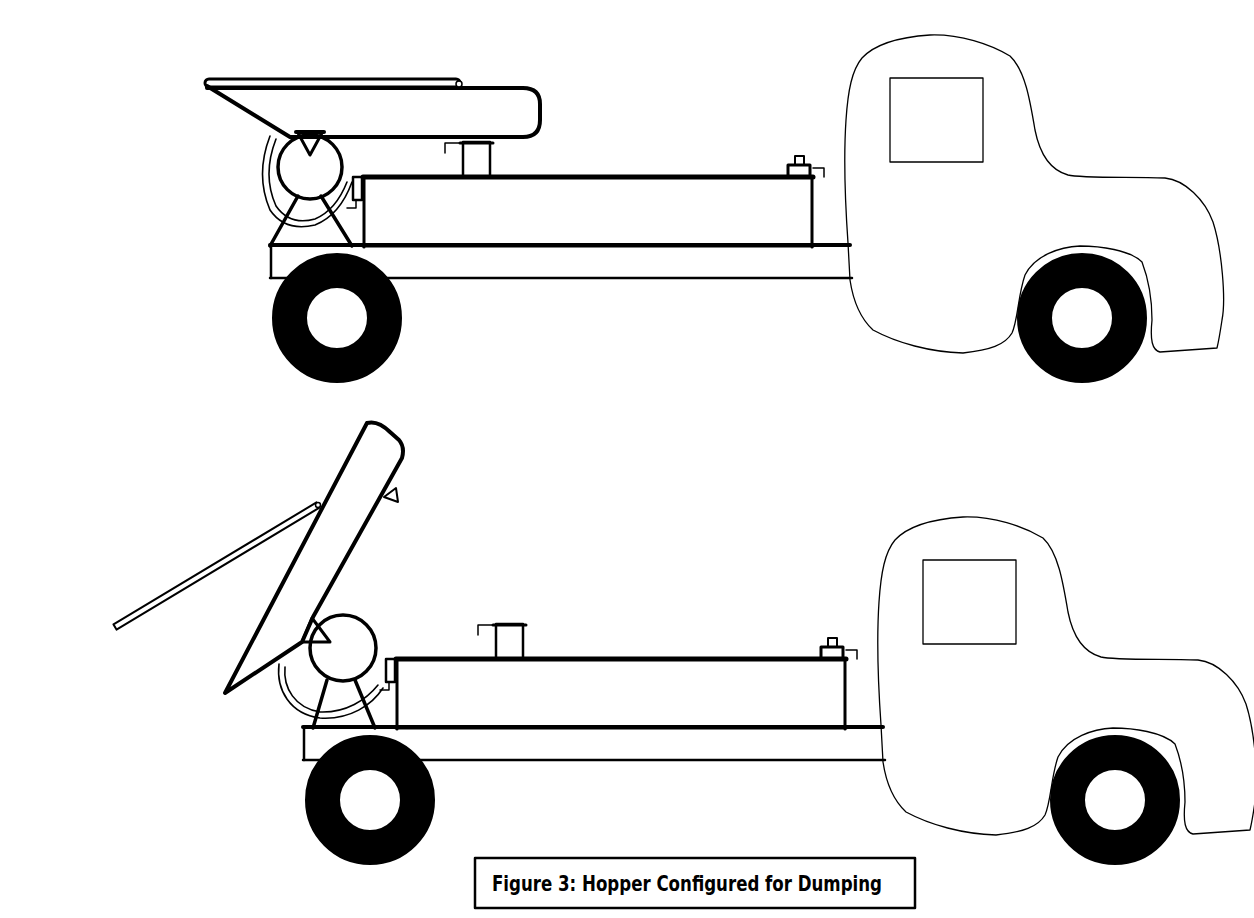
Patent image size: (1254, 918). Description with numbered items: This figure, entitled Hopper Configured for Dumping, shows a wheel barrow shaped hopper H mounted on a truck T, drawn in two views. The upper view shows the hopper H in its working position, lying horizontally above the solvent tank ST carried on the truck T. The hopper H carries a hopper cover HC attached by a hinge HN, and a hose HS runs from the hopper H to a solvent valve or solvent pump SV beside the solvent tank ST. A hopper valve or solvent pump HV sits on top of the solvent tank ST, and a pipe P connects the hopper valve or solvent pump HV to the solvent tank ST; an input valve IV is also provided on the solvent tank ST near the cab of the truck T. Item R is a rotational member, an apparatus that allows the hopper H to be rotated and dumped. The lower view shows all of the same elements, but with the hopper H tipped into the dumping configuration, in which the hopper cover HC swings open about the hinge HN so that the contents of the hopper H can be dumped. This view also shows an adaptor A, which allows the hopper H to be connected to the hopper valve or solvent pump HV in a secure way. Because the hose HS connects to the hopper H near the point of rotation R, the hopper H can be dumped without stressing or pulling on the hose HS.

The hopper cover HC is at (218, 80).
The hinge HN is at (457, 81).
The hopper H is at (513, 86).
The input valve IV is at (787, 162).
The hose HS is at (263, 178).
The rotational member R is at (307, 168).
The pipe P is at (462, 167).
The hopper valve or solvent pump HV is at (493, 146).
The solvent valve or solvent pump SV is at (368, 197).
The solvent tank ST is at (557, 215).
The truck T is at (890, 278).
The adaptor A is at (397, 495).